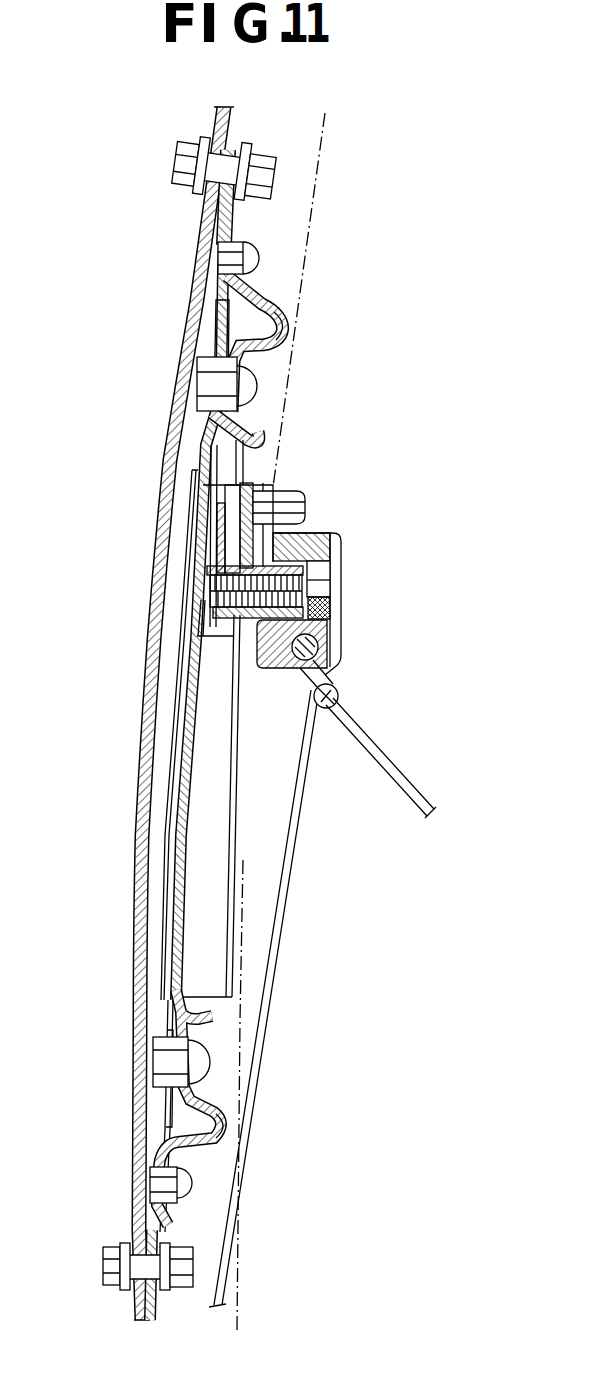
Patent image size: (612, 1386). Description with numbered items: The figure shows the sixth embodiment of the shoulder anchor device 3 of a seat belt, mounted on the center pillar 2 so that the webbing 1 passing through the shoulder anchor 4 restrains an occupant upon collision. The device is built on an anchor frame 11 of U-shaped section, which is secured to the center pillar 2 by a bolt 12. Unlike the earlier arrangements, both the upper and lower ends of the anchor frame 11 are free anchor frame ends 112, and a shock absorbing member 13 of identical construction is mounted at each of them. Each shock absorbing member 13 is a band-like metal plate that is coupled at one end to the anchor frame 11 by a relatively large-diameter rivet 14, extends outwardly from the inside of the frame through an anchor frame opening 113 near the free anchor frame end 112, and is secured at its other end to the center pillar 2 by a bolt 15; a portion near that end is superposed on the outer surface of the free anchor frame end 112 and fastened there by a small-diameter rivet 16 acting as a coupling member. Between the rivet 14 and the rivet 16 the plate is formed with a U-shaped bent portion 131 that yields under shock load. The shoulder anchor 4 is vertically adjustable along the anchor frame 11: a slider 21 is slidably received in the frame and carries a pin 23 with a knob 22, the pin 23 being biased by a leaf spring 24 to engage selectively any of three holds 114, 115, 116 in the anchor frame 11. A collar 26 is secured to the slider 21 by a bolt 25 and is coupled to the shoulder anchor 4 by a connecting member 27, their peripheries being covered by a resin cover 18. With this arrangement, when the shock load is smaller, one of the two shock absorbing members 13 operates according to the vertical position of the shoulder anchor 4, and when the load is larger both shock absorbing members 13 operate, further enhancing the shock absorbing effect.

The webbing 1 is at (395, 764).
The center pillar 2 is at (176, 379).
The shoulder anchor device 3 is at (336, 456).
The shoulder anchor 4 is at (328, 708).
The anchor frame 11 is at (196, 524).
The free anchor frame end 112 is at (244, 232).
The anchor frame opening 113 is at (227, 317).
The hold 114 is at (198, 499).
The hold 115 is at (198, 616).
The hold 116 is at (178, 732).
The bolt 12 is at (108, 1270).
The shock absorbing member 13 is at (272, 290).
The U-shaped bent portion 131 is at (284, 323).
The rivet 14 is at (252, 391).
The bolt 15 is at (182, 160).
The rivet 16 is at (200, 238).
The cover 18 is at (340, 548).
The slider 21 is at (221, 640).
The knob 22 is at (337, 111).
The pin 23 is at (210, 487).
The leaf spring 24 is at (244, 480).
The bolt 25 is at (334, 608).
The collar 26 is at (330, 548).
The connecting member 27 is at (266, 669).